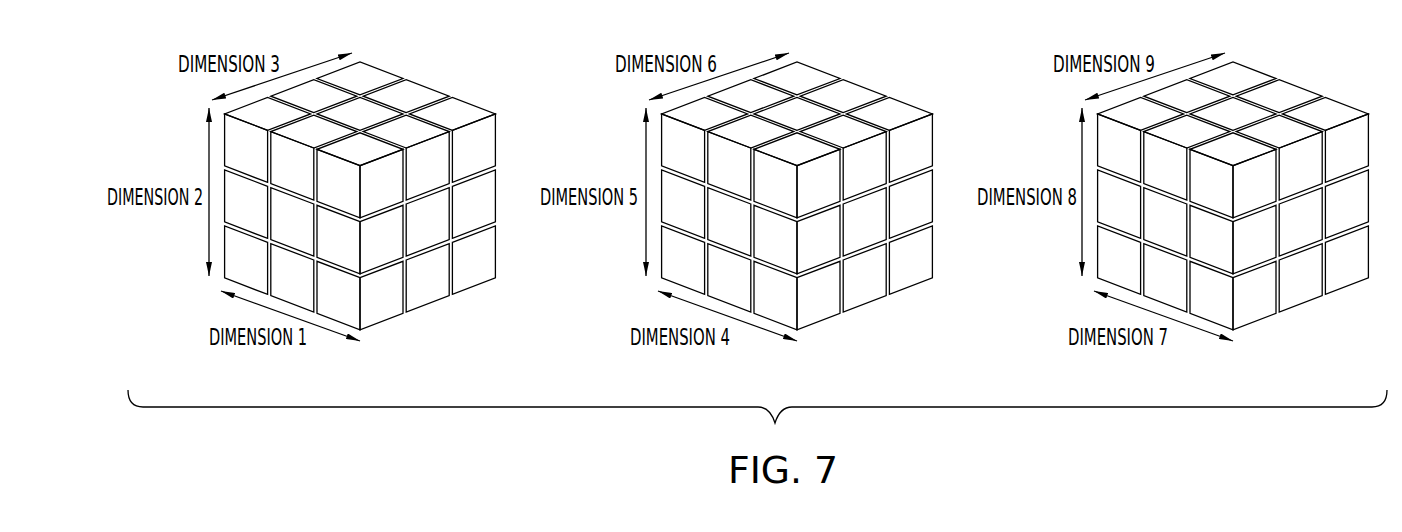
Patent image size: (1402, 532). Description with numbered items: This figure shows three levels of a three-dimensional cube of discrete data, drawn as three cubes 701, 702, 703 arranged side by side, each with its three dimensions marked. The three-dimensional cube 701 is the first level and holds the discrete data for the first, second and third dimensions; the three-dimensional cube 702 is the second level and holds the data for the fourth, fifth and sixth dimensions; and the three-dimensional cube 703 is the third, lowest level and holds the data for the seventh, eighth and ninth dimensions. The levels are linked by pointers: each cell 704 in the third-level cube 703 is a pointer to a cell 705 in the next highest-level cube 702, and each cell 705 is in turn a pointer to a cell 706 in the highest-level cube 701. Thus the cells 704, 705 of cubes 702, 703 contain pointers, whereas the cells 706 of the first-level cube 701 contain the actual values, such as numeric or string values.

The three-dimensional cube 701 is at (360, 182).
The three-dimensional cube 702 is at (797, 182).
The three-dimensional cube 703 is at (1233, 182).
The cell 704 is at (1307, 298).
The cell 705 is at (871, 298).
The cell 706 is at (428, 293).